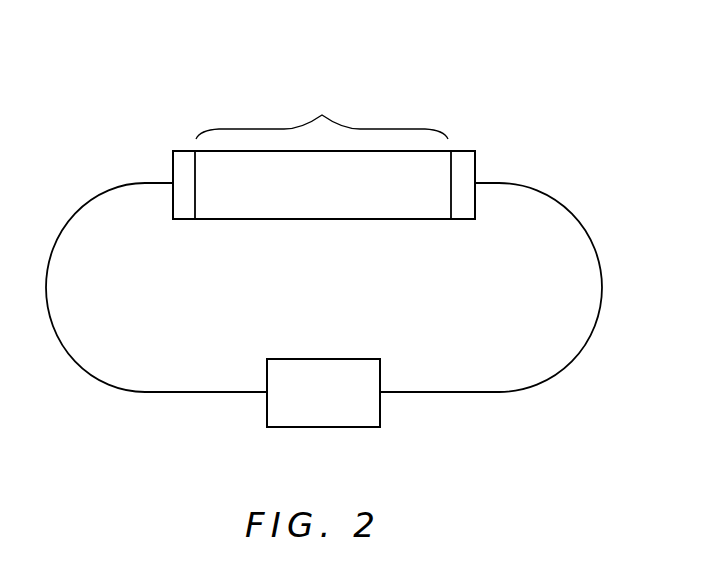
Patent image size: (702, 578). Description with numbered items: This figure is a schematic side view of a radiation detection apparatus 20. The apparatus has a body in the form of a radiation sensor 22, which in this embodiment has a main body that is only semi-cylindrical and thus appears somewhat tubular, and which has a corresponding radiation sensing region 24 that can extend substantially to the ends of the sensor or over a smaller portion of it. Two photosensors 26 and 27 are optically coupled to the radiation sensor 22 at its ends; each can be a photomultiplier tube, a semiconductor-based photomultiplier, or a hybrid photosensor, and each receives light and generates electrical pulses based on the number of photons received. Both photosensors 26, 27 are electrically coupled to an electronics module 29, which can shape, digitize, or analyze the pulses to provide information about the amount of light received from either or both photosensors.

The radiation detection apparatus 20 is at (557, 64).
The radiation sensor 22 is at (334, 194).
The radiation sensing region 24 is at (322, 110).
The photosensor 26 is at (177, 205).
The photosensor 27 is at (460, 207).
The electronics module 29 is at (335, 402).